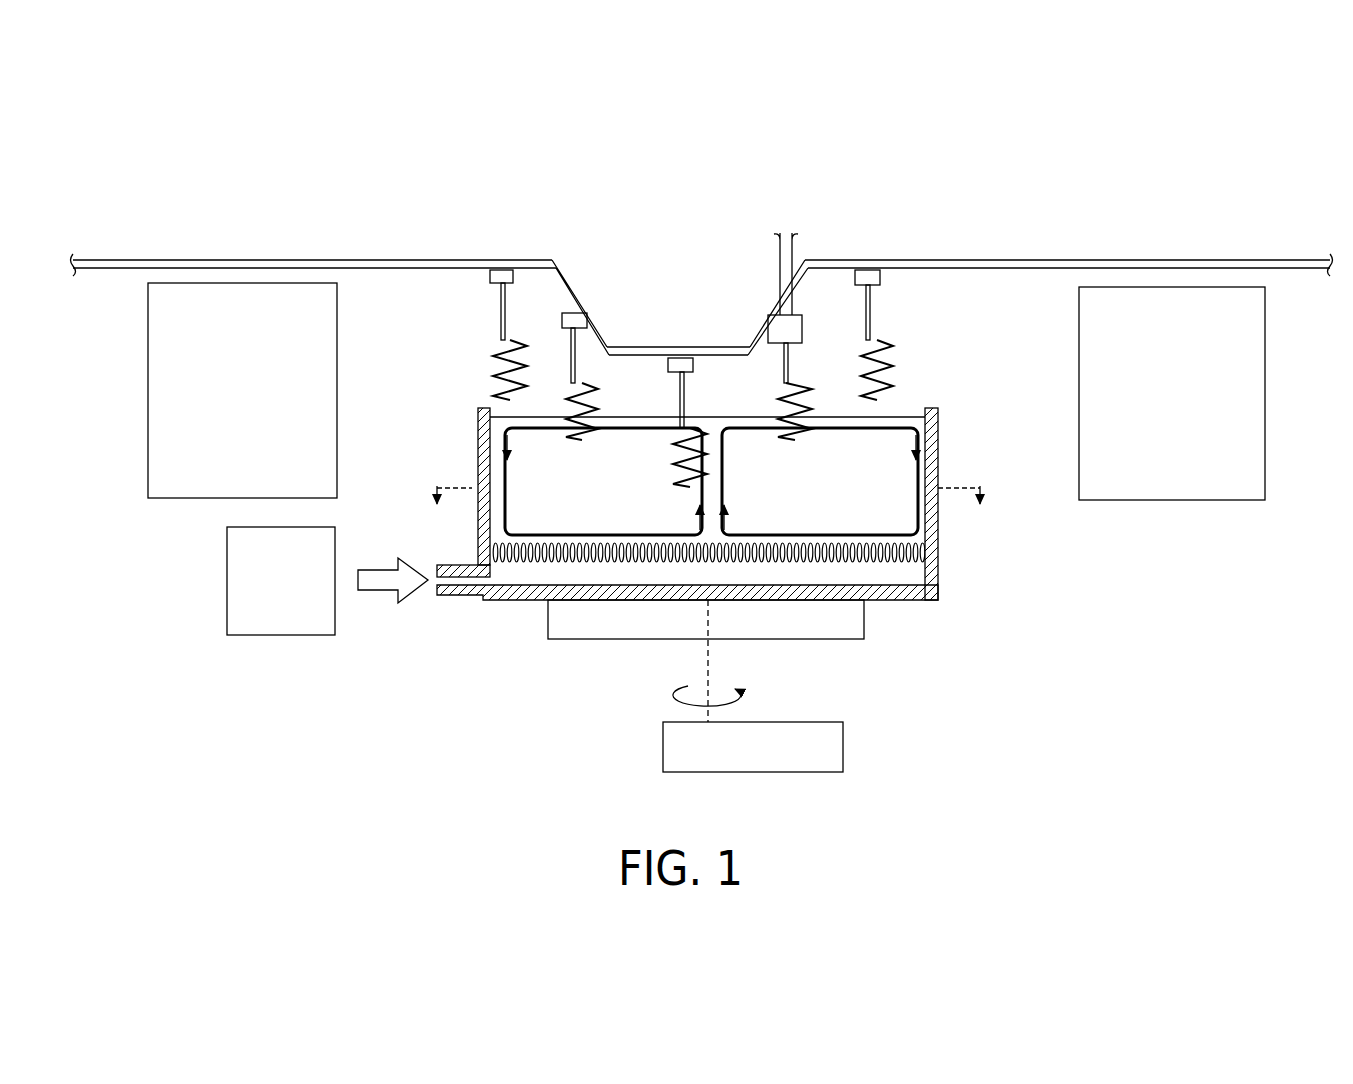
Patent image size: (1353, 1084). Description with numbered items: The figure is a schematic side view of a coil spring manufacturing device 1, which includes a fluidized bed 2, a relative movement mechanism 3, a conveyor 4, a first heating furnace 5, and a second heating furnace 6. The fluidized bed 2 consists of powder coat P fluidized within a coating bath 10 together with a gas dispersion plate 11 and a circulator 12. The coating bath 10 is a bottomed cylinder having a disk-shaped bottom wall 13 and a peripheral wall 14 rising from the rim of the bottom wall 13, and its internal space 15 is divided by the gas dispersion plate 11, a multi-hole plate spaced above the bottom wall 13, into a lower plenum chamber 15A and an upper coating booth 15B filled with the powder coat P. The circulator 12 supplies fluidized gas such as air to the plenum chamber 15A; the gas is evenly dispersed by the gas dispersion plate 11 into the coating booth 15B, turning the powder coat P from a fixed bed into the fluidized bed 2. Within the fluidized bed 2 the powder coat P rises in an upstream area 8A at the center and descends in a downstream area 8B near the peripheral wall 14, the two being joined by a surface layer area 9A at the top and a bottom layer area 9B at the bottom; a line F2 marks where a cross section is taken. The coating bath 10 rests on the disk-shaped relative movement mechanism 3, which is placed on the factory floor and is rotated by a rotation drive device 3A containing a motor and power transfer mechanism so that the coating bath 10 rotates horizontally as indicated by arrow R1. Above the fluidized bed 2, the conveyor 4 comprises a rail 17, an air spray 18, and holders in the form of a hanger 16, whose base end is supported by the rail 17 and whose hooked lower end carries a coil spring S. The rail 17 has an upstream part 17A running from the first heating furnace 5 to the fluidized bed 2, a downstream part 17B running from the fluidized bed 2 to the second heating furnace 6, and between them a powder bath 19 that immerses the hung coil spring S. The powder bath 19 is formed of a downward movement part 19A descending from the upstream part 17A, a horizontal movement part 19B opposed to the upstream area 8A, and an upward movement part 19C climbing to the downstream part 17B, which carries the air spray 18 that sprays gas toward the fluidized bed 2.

The coil spring manufacturing device 1 is at (540, 705).
The fluidized bed 2 is at (813, 503).
The relative movement mechanism 3 is at (760, 625).
The rotation drive device 3A is at (840, 746).
The conveyor 4 is at (922, 243).
The first heating furnace 5 is at (160, 393).
The second heating furnace 6 is at (1210, 492).
The upstream area 8A is at (770, 456).
The downstream area 8B is at (902, 477).
The surface layer area 9A is at (828, 420).
The bottom layer area 9B is at (848, 547).
The coating bath 10 is at (882, 604).
The gas dispersion plate 11 is at (608, 600).
The circulator 12 is at (287, 640).
The bottom wall 13 is at (640, 600).
The peripheral wall 14 is at (930, 568).
The internal space 15 is at (532, 490).
The plenum chamber 15A is at (525, 570).
The coating booth 15B is at (498, 480).
The hanger 16 is at (498, 322).
The rail 17 is at (443, 258).
The upstream part 17A is at (233, 262).
The downstream part 17B is at (1168, 262).
The air spray 18 is at (795, 340).
The powder bath 19 is at (700, 342).
The downward movement part 19A is at (572, 292).
The horizontal movement part 19B is at (650, 345).
The upward movement part 19C is at (766, 337).
The coil spring S is at (493, 375).
The powder coat P is at (637, 425).
The arrow R1 is at (693, 698).
The line F2 is at (706, 516).